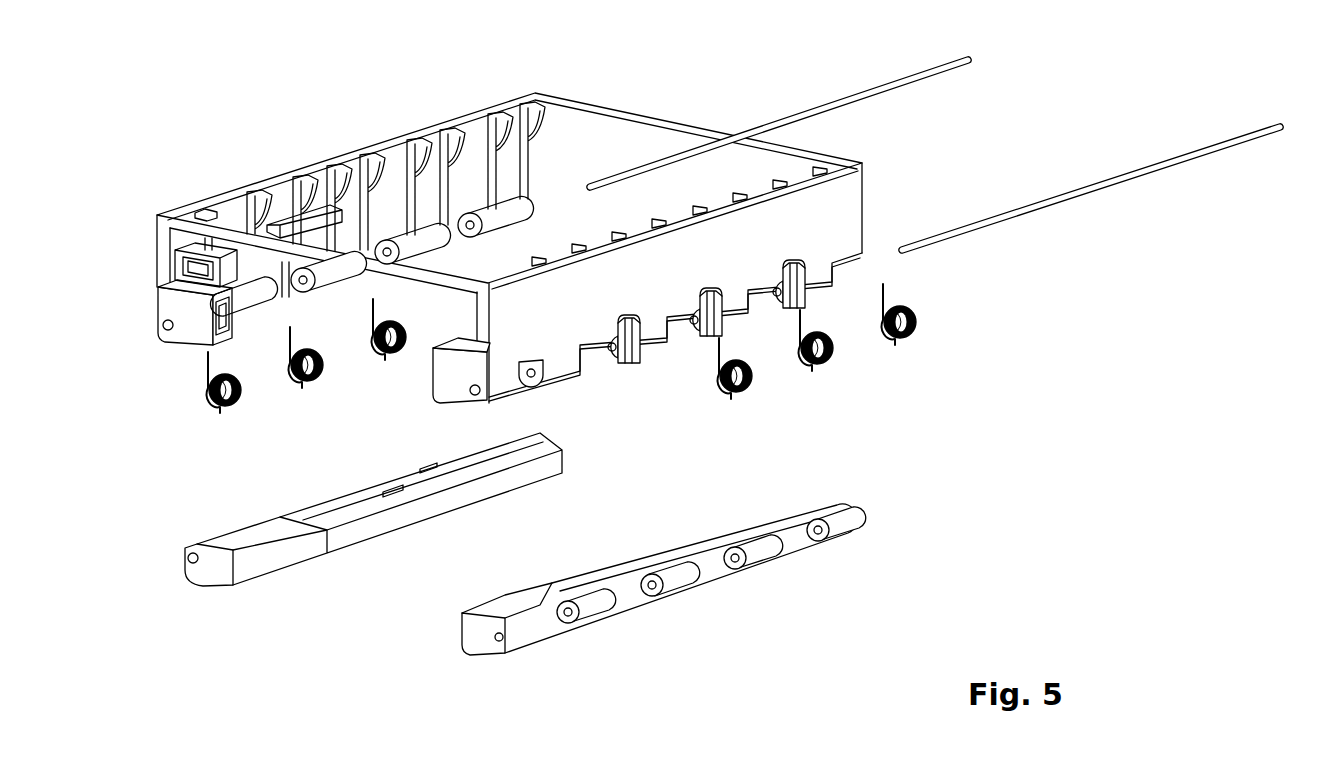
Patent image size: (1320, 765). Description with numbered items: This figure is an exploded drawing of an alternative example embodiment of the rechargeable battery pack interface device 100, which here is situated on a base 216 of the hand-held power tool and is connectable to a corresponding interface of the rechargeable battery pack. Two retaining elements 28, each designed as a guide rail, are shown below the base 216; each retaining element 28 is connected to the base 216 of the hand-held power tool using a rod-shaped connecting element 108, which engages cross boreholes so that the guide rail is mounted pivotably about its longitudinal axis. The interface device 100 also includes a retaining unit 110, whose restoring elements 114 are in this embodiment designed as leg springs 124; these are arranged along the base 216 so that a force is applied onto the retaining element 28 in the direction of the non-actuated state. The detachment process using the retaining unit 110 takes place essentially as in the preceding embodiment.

The rechargeable battery pack interface device 100 is at (566, 239).
The base 216 is at (470, 108).
The connecting element 108 is at (887, 68).
The retaining unit 110 is at (859, 293).
The leg spring 124 is at (946, 374).
The restoring element 114 is at (913, 337).
The retaining element 28 is at (283, 548).